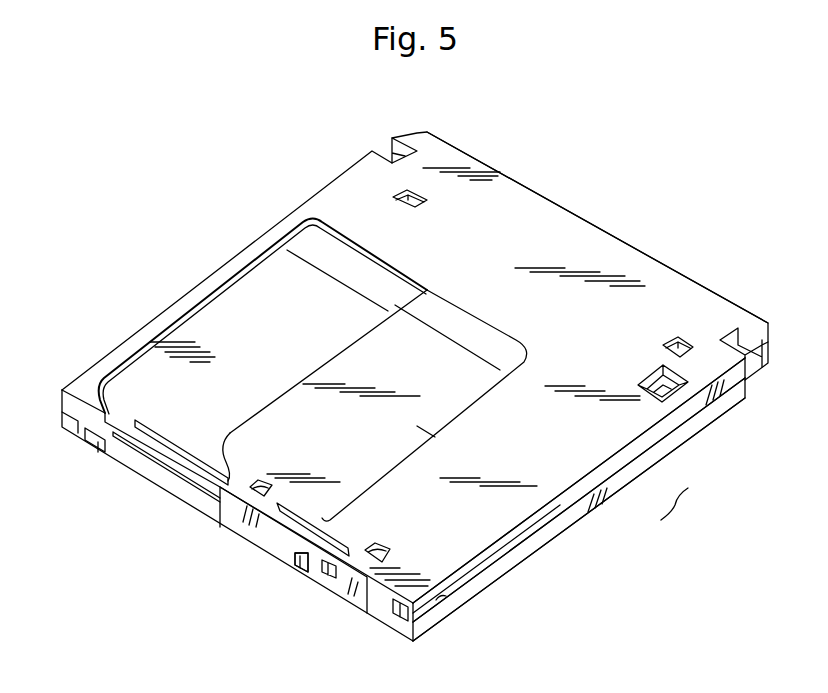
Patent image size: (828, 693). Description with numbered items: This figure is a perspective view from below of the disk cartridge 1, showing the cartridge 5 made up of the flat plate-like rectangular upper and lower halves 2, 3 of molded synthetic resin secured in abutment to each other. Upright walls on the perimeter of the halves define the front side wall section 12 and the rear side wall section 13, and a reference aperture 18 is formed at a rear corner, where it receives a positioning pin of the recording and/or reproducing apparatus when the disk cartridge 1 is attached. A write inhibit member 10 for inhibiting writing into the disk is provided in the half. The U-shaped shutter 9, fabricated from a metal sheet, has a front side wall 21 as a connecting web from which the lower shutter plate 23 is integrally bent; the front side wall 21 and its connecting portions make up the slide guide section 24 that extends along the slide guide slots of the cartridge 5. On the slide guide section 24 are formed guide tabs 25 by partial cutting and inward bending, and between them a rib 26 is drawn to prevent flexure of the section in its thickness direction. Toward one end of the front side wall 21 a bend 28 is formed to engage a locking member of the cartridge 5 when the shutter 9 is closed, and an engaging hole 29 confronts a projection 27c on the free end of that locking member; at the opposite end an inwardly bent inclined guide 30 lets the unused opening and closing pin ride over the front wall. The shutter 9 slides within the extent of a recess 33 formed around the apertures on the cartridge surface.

The disk cartridge 1 is at (340, 195).
The upper half 2 is at (598, 497).
The lower half 3 is at (610, 467).
The cartridge 5 is at (678, 508).
The shutter 9 is at (430, 433).
The write inhibit member 10 is at (670, 378).
The front side wall section 12 is at (128, 447).
The rear side wall section 13 is at (558, 196).
The reference aperture 18 is at (417, 192).
The front side wall 21 is at (267, 537).
The lower shutter plate 23 is at (351, 355).
The slide guide section 24 is at (400, 566).
The guide tab 25 is at (255, 485).
The rib 26 is at (328, 517).
The projection 27c is at (305, 567).
The bend 28 is at (329, 573).
The engaging hole 29 is at (300, 563).
The inclined guide 30 is at (190, 498).
The recess 33 is at (217, 296).